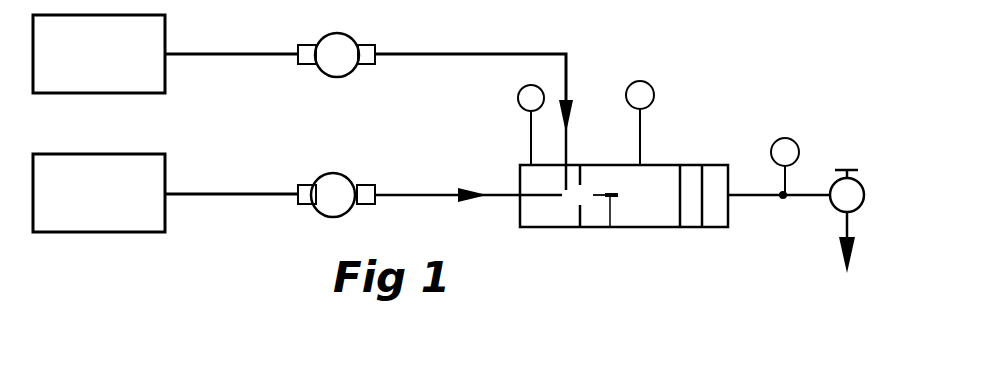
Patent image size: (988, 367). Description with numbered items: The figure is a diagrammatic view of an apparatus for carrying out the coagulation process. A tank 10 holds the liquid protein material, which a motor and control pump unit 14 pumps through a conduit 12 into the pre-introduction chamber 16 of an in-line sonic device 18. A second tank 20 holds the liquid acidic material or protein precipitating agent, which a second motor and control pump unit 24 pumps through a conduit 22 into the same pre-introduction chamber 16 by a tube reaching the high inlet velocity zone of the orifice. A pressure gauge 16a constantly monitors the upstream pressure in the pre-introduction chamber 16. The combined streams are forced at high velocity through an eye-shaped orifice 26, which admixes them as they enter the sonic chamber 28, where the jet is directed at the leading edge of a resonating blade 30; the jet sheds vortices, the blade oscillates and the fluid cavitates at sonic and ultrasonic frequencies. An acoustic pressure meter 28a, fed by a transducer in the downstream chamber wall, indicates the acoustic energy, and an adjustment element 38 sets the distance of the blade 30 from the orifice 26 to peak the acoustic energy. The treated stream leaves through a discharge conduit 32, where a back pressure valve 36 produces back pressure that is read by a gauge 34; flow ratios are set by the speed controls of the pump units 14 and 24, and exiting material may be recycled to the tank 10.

The tank 10 is at (165, 83).
The conduit 12 is at (220, 54).
The motor and control pump unit 14 is at (355, 33).
The pre-introduction chamber 16 is at (563, 207).
The pressure gauge 16a is at (517, 90).
The in-line sonic device 18 is at (724, 157).
The second tank 20 is at (115, 233).
The conduit 22 is at (235, 197).
The motor and control pump unit 24 is at (340, 170).
The orifice 26 is at (583, 195).
The sonic chamber 28 is at (662, 165).
The acoustic pressure meter 28a is at (648, 83).
The resonating blade 30 is at (610, 227).
The discharge conduit 32 is at (760, 198).
The gauge 34 is at (799, 149).
The back pressure valve 36 is at (882, 180).
The adjustment element 38 is at (700, 230).